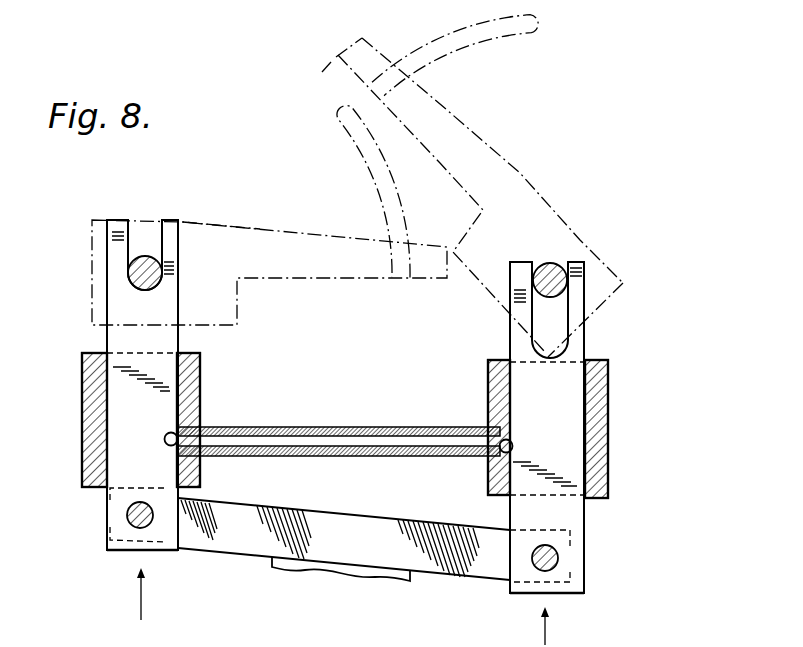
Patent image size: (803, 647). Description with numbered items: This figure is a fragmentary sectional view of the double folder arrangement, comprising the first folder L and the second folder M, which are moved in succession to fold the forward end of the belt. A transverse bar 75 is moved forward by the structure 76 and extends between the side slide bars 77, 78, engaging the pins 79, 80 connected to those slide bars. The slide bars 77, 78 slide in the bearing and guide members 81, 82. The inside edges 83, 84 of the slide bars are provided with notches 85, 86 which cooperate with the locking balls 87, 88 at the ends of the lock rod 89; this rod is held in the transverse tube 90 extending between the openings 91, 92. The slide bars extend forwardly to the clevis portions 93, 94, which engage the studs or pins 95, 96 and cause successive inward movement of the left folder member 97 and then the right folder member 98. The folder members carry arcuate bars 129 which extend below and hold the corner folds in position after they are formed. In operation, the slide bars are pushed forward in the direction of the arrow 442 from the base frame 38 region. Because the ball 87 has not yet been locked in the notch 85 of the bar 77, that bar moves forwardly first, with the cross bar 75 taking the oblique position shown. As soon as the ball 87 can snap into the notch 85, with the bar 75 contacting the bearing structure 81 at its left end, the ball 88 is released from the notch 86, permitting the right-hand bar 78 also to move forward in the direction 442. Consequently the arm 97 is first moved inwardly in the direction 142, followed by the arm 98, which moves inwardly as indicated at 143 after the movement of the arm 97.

The base frame 38 is at (163, 555).
The transverse bar 75 is at (477, 557).
The structure 76 is at (350, 570).
The side slide bar 77 is at (120, 420).
The side slide bar 78 is at (565, 383).
The pin 79 is at (127, 512).
The pin 80 is at (559, 558).
The bearing and guide member 81 is at (82, 360).
The bearing and guide member 82 is at (600, 452).
The inside edge 83 is at (183, 343).
The inside edge 84 is at (510, 330).
The notch 85 is at (170, 434).
The notch 86 is at (513, 450).
The locking ball 87 is at (192, 428).
The locking ball 88 is at (507, 432).
The lock rod 89 is at (393, 430).
The transverse tube 90 is at (340, 457).
The opening 91 is at (203, 466).
The opening 92 is at (490, 463).
The clevis portion 93 is at (113, 249).
The clevis portion 94 is at (577, 297).
The stud or pin 95 is at (146, 255).
The stud or pin 96 is at (560, 265).
The left folder member 97 is at (283, 233).
The right folder member 98 is at (507, 175).
The arcuate bar 129 is at (462, 50).
The direction 142 is at (361, 215).
The direction of inward movement 143 is at (310, 97).
The arrow 442 is at (545, 636).
The first folder L is at (209, 218).
The second folder M is at (492, 136).